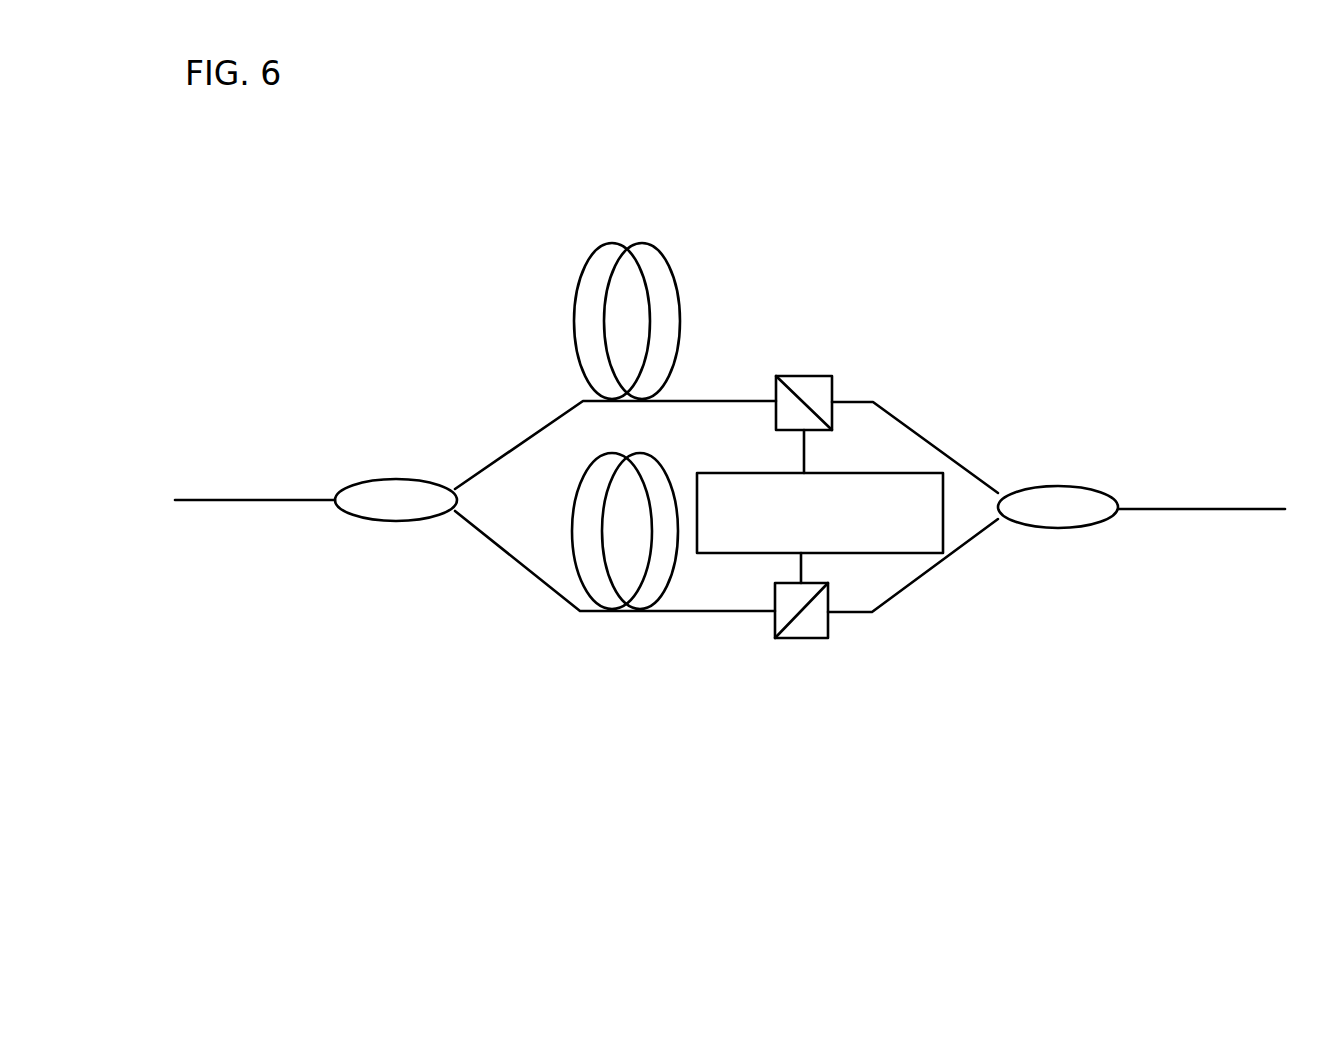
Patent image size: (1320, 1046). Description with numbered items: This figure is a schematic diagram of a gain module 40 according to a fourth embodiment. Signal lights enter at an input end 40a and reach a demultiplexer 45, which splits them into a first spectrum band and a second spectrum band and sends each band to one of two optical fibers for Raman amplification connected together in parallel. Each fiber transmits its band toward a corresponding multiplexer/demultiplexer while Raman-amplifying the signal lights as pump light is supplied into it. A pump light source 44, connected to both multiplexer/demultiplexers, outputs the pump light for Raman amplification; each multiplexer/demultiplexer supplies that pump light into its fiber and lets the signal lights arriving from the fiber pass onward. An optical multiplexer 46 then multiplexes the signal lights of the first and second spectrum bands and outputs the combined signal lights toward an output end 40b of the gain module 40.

The gain module 40 is at (988, 326).
The input end 40a is at (207, 501).
The output end 40b is at (1247, 510).
The pump light source 44 is at (862, 462).
The demultiplexer 45 is at (402, 522).
The optical multiplexer 46 is at (1058, 528).